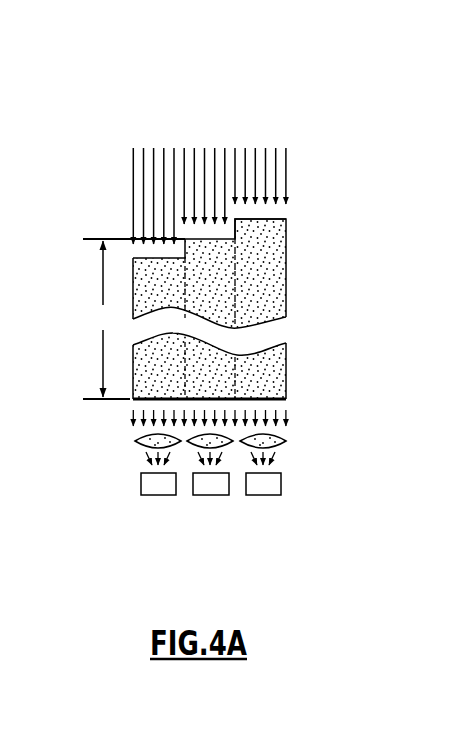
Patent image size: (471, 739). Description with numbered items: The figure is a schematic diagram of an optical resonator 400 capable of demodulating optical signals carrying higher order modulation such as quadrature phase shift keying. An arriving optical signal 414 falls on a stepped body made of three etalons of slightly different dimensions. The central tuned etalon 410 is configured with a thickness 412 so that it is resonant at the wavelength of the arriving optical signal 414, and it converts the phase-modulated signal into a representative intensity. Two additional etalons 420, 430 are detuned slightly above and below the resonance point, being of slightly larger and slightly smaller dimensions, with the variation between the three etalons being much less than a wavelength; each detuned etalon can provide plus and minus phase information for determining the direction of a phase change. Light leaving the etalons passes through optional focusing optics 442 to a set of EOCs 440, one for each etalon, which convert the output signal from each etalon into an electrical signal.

The optical resonator 400 is at (285, 73).
The arriving optical signal 414 is at (303, 162).
The tuned etalon 410 is at (218, 263).
The additional etalon 430 is at (258, 246).
The additional etalon 420 is at (162, 288).
The thickness 412 is at (134, 319).
The focusing optics 442 is at (292, 444).
The EOCs 440 is at (173, 503).